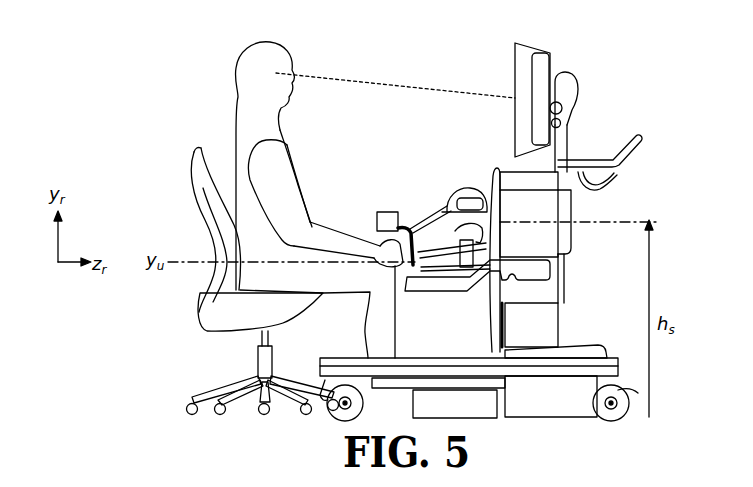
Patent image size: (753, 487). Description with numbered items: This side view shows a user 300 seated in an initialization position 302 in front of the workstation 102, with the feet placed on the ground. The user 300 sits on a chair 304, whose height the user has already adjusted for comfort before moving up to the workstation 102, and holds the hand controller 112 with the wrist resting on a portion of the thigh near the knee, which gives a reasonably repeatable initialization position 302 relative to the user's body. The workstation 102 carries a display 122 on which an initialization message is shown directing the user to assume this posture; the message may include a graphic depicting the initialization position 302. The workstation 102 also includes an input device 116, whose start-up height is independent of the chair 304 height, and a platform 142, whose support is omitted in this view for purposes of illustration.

The user 300 is at (293, 200).
The initialization position 302 is at (350, 218).
The chair 304 is at (190, 175).
The workstation 102 is at (586, 146).
The display 122 is at (532, 43).
The platform 142 is at (483, 296).
The input device 116 is at (490, 202).
The hand controller 112 is at (383, 262).